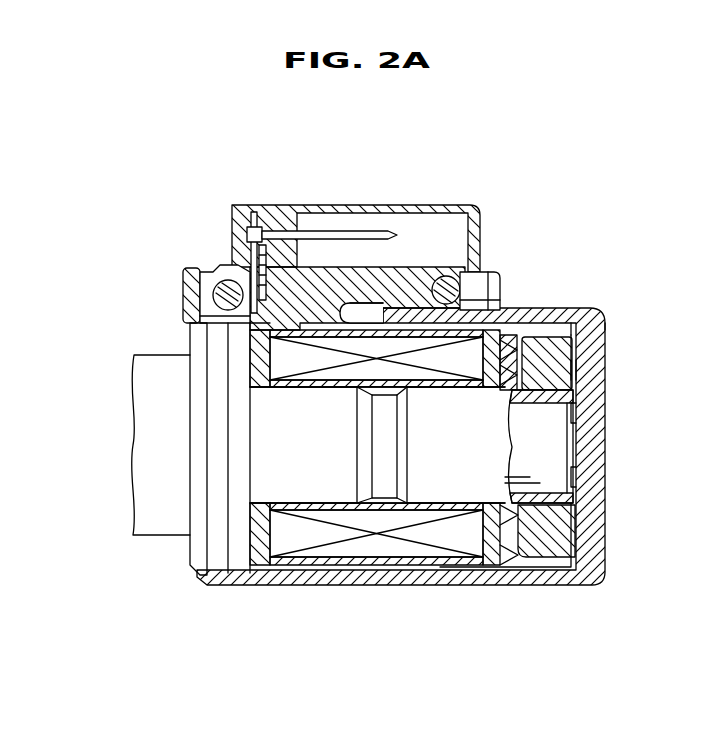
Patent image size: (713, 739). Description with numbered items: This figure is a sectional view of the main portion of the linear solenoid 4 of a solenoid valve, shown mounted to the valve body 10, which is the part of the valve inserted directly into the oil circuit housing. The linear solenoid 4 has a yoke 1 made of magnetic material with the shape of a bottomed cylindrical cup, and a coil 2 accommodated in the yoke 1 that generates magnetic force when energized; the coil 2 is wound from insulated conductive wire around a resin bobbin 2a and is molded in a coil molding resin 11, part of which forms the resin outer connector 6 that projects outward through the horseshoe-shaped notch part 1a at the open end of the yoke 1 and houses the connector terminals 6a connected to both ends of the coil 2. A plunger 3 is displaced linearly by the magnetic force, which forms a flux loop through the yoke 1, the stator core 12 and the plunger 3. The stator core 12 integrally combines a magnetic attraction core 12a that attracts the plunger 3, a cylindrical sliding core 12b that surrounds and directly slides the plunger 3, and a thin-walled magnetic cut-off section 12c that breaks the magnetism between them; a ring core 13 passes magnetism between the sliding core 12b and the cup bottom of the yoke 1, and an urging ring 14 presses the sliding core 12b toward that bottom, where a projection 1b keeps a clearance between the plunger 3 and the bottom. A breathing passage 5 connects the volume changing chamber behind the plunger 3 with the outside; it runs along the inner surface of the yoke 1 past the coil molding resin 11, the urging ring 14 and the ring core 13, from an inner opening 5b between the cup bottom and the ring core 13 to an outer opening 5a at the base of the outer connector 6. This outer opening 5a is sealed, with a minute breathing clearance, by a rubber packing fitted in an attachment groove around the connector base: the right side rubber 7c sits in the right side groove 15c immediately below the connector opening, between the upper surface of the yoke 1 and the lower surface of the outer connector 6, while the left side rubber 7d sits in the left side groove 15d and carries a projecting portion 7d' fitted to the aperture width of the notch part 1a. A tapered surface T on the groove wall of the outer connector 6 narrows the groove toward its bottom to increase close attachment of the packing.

The yoke 1 is at (289, 586).
The notch part 1a is at (420, 302).
The projection 1b is at (580, 485).
The coil 2 is at (290, 355).
The resin bobbin 2a is at (323, 387).
The plunger 3 is at (545, 445).
The linear solenoid 4 is at (644, 183).
The breathing passage 5 is at (507, 370).
The outer opening 5a is at (250, 255).
The inner opening 5b is at (575, 370).
The outer connector 6 is at (486, 190).
The connector terminals 6a is at (372, 232).
The right side rubber 7c is at (477, 282).
The left side rubber 7d is at (181, 294).
The projecting portion 7d' is at (174, 315).
The valve body 10 is at (163, 535).
The coil molding resin 11 is at (297, 333).
The stator core 12 is at (478, 640).
The magnetic attraction core 12a is at (310, 482).
The sliding core 12b is at (447, 483).
The magnetic cut-off section 12c is at (383, 482).
The ring core 13 is at (575, 330).
The urging ring 14 is at (558, 343).
The right side groove 15c is at (445, 340).
The left side groove 15d is at (227, 328).
The tapered surface T is at (252, 282).